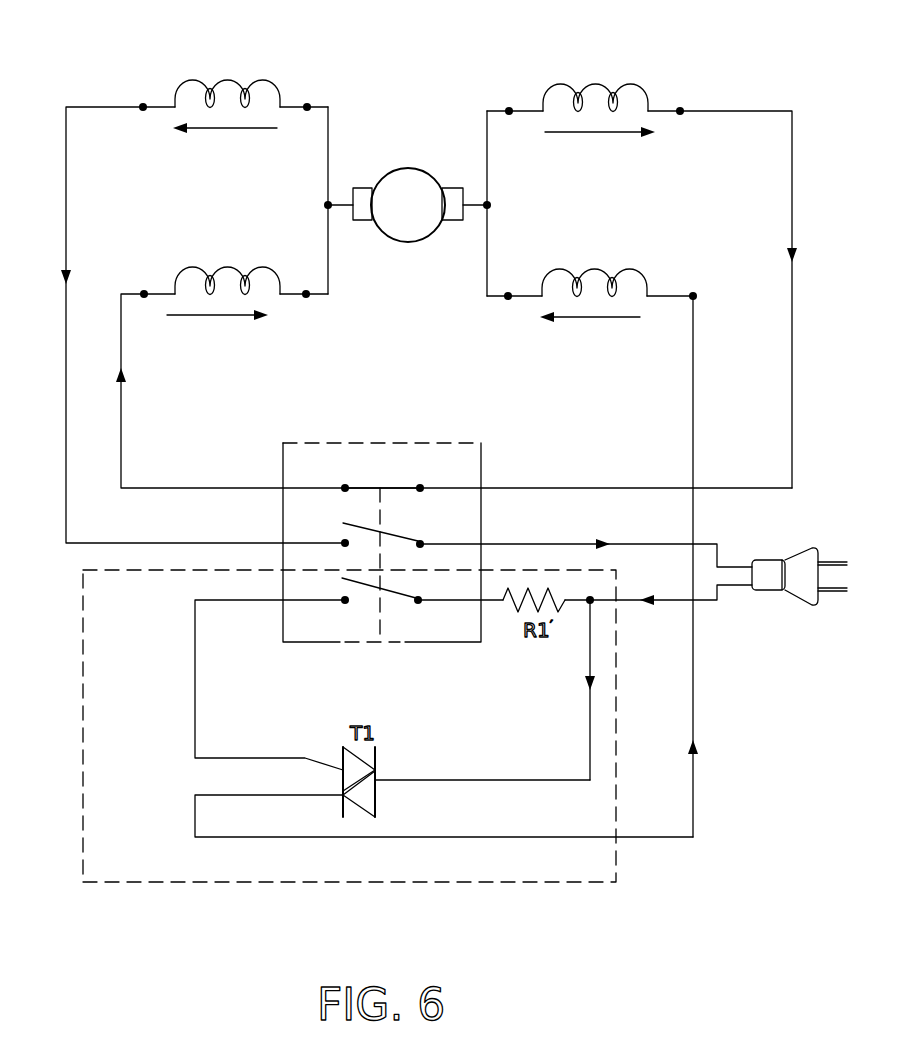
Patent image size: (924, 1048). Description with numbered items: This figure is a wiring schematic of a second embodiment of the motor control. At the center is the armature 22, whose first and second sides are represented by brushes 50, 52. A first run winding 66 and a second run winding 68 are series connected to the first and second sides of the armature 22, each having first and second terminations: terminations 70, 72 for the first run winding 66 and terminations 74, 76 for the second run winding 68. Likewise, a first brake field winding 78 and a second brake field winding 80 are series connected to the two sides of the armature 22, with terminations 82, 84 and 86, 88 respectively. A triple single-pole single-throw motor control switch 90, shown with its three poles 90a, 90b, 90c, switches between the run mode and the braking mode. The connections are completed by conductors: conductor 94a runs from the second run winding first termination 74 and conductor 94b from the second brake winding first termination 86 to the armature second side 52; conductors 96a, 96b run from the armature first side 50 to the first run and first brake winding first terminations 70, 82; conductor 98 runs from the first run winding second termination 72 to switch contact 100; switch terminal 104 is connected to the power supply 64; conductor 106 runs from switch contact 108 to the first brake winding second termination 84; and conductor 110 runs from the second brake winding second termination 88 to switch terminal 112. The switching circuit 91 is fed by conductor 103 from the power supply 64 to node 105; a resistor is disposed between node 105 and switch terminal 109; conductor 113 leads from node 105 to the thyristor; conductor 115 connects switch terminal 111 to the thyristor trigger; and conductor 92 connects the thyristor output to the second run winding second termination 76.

The armature 22 is at (405, 242).
The brush 50 is at (363, 188).
The brush 52 is at (453, 188).
The power supply 64 is at (792, 600).
The first run winding 66 is at (255, 80).
The second run winding 68 is at (612, 270).
The first termination of first run winding 70 is at (307, 106).
The second termination of first run winding 72 is at (143, 106).
The first termination of second run winding 74 is at (508, 297).
The second termination of second run winding 76 is at (693, 295).
The first brake field winding 78 is at (205, 268).
The second brake field winding 80 is at (613, 84).
The first termination of first brake field winding 82 is at (306, 296).
The second termination of first brake field winding 84 is at (144, 293).
The first termination of second brake field winding 86 is at (509, 110).
The second termination of second brake field winding 88 is at (680, 110).
The motor control switch 90 is at (382, 420).
The switch pole 90a is at (402, 488).
The switch pole 90b is at (395, 537).
The switch pole 90c is at (385, 592).
The switching circuit 91 is at (414, 903).
The conductor 92 is at (693, 666).
The conductor 94a is at (487, 248).
The conductor 94b is at (487, 172).
The conductor 96a is at (328, 170).
The conductor 96b is at (328, 248).
The conductor 98 is at (66, 418).
The switch contact 100 is at (345, 543).
The conductor 103 is at (675, 602).
The switch terminal 104 is at (420, 546).
The node 105 is at (590, 602).
The conductor 106 is at (121, 445).
The switch contact 108 is at (345, 488).
The switch terminal 109 is at (418, 603).
The conductor 110 is at (792, 312).
The switch terminal 111 is at (344, 603).
The switch terminal 112 is at (420, 488).
The conductor 113 is at (478, 781).
The conductor 115 is at (195, 638).